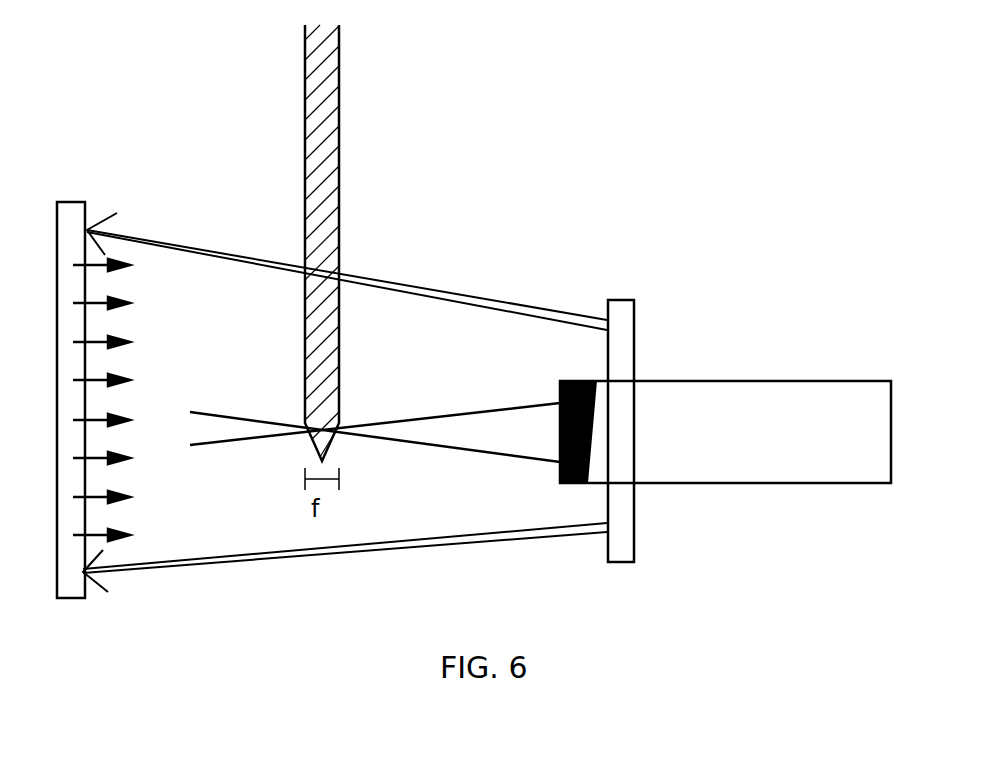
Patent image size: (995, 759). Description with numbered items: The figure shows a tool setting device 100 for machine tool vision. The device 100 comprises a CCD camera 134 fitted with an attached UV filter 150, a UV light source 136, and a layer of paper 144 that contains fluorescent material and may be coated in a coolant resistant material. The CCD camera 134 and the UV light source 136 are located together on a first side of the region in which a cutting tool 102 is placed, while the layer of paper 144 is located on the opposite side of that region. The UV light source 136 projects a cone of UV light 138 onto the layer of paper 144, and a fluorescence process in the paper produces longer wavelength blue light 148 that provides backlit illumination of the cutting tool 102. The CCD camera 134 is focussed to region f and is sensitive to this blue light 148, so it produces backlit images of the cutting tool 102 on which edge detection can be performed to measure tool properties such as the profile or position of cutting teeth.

The tool setting device 100 is at (707, 448).
The cutting tool 102 is at (343, 160).
The CCD camera 134 is at (774, 446).
The UV light source 136 is at (636, 331).
The cone of UV light 138 is at (428, 289).
The layer of paper 144 is at (77, 202).
The longer wavelength (blue) light 148 is at (128, 342).
The UV filter 150 is at (578, 483).